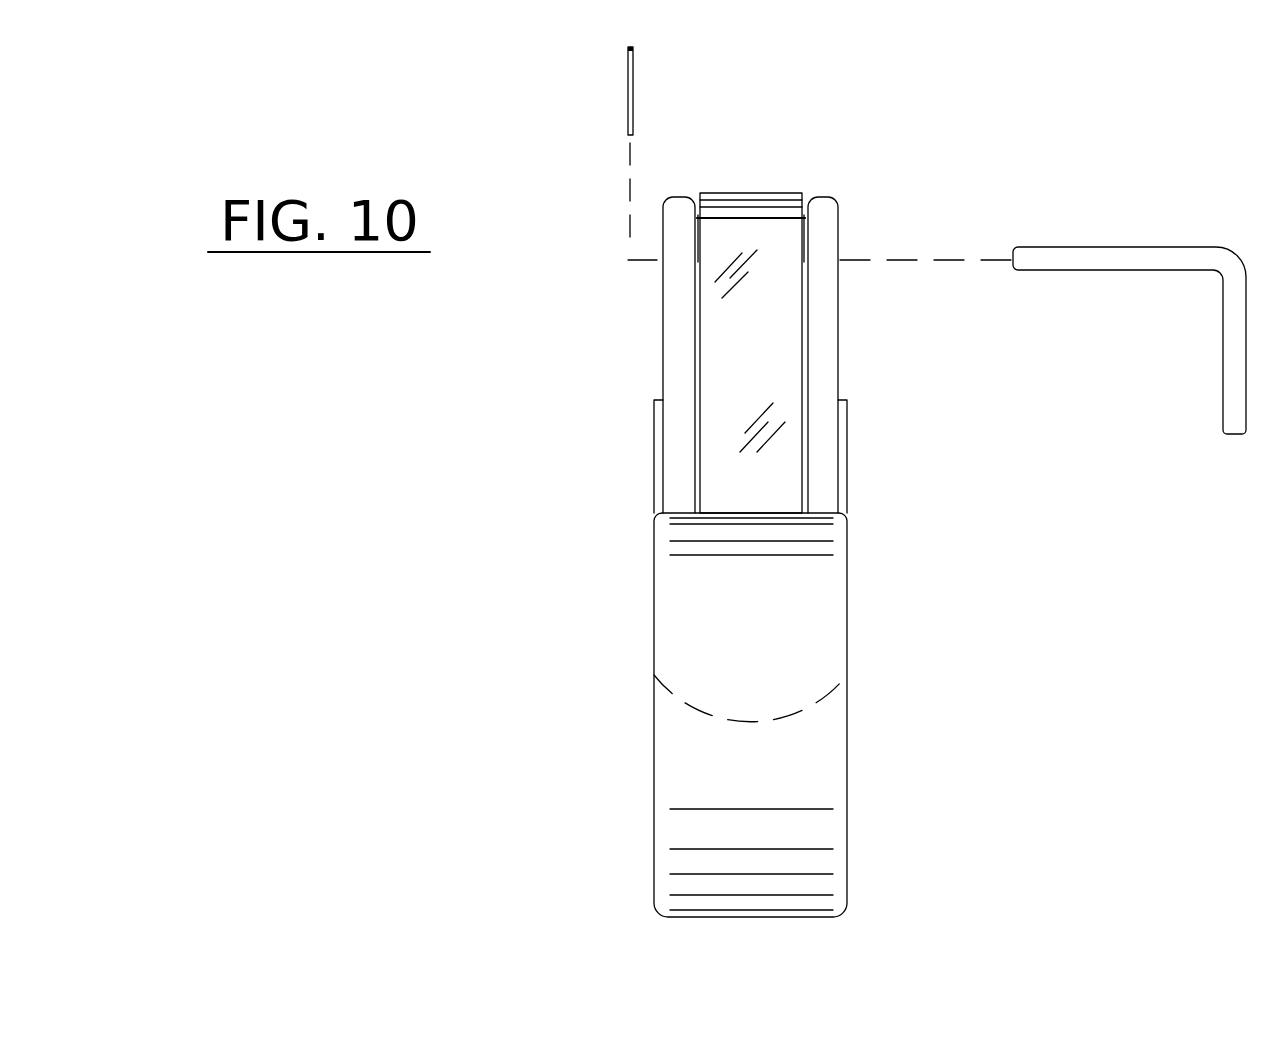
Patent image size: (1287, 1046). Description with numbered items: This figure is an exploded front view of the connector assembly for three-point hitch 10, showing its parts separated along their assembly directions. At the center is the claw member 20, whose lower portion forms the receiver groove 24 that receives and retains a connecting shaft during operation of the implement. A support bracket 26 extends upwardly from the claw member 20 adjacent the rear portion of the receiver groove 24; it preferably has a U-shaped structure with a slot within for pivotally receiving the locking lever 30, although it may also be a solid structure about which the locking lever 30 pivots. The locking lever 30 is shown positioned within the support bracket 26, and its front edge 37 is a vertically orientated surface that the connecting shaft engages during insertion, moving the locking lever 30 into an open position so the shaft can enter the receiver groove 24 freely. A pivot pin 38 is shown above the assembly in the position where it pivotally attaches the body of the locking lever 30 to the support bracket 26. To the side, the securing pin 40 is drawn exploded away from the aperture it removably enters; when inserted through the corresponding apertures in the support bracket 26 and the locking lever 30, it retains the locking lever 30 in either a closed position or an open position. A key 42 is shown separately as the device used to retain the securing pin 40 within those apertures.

The connector assembly for three-point hitch 10 is at (1114, 193).
The claw member 20 is at (852, 793).
The receiver groove 24 is at (688, 705).
The support bracket 26 is at (680, 448).
The locking lever 30 is at (724, 391).
The front edge 37 is at (778, 363).
The pivot pin 38 is at (806, 237).
The securing pin 40 is at (1232, 415).
The key 42 is at (633, 98).